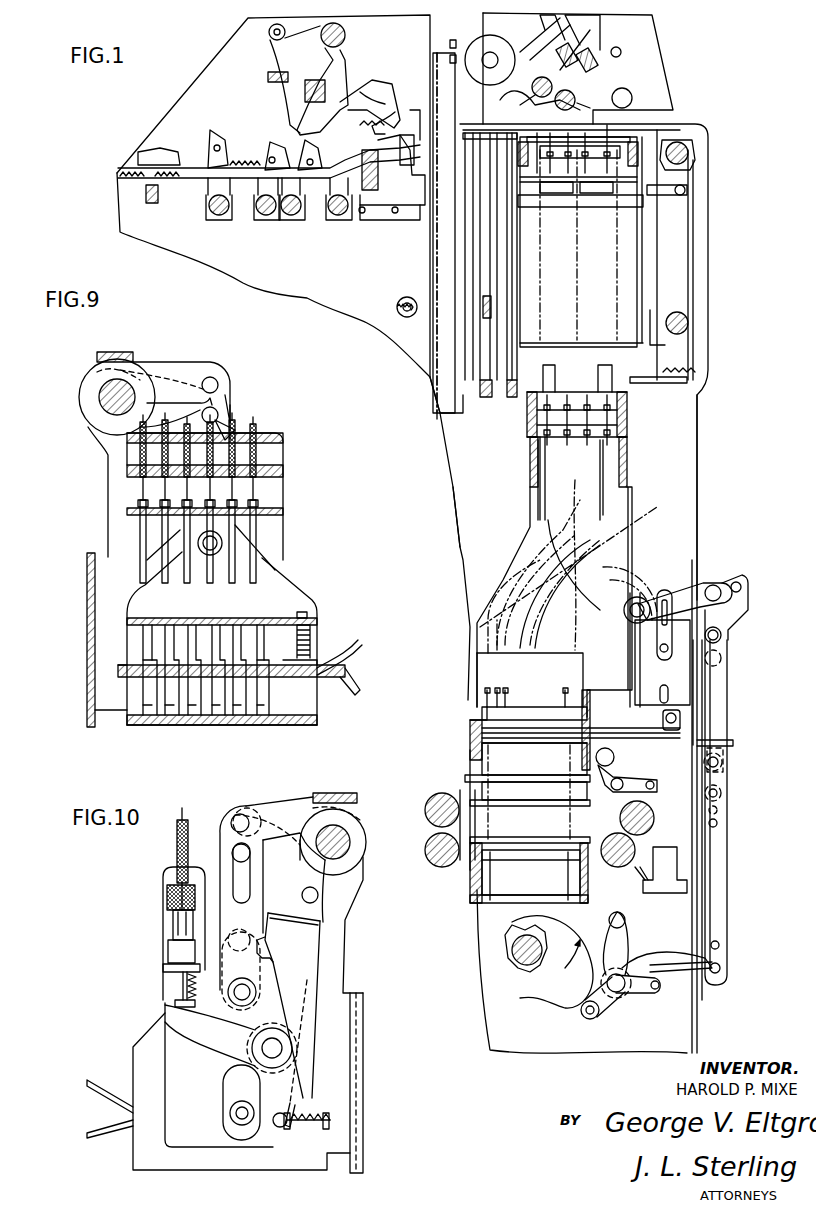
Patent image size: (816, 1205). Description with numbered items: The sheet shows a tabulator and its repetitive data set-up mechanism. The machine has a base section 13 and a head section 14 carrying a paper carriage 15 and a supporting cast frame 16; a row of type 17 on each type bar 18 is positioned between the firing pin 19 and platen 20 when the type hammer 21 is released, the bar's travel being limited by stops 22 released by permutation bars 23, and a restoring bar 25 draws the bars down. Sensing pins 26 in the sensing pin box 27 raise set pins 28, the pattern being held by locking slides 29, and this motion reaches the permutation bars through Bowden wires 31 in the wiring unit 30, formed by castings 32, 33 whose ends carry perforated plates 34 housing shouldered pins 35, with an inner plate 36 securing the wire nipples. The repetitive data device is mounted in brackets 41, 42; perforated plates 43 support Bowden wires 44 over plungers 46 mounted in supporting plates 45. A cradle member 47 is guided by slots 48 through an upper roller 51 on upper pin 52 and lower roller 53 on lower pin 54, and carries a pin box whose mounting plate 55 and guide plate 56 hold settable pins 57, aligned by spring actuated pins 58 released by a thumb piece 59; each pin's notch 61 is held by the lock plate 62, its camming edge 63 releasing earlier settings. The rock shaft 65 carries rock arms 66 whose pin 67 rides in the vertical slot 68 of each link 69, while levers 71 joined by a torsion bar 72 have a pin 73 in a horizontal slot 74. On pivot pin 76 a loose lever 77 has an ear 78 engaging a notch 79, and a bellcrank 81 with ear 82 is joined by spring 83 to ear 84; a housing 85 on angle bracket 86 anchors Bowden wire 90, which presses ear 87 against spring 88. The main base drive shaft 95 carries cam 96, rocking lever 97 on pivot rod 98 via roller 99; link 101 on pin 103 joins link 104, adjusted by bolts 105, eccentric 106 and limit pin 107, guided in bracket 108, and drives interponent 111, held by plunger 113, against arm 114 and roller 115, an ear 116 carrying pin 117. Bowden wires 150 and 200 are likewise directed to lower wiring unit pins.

In FIG. 1, the base section 13 is at (465, 950).
In FIG. 1, the head section 14 is at (703, 403).
In FIG. 1, the paper carriage 15 is at (670, 60).
In FIG. 1, the supporting cast frame 16 is at (470, 456).
In FIG. 1, the type 17 is at (435, 62).
In FIG. 1, the type bar 18 is at (434, 425).
In FIG. 1, the firing pin 19 is at (400, 62).
In FIG. 1, the platen 20 is at (480, 78).
In FIG. 1, the type hammer 21 is at (352, 72).
In FIG. 1, the stops 22 is at (555, 203).
In FIG. 1, the permutation bars 23 is at (600, 190).
In FIG. 1, the restoring bar 25 is at (485, 300).
In FIG. 1, the sensing pins 26 is at (560, 885).
In FIG. 1, the sensing pin box 27 is at (472, 888).
In FIG. 1, the set pins 28 is at (565, 765).
In FIG. 1, the locking slides 29 is at (475, 790).
In FIG. 1, the wiring unit 30 is at (518, 516).
In FIG. 1, the Bowden wires 31 is at (525, 552).
In FIG. 1, the casting 32 is at (528, 470).
In FIG. 1, the rear wiring unit casting 33 is at (622, 472).
In FIG. 1, the perforated plates 34 is at (617, 424).
In FIG. 1, the shouldered pins 35 is at (540, 402).
In FIG. 1, the plate 36 is at (548, 455).
In FIG. 1, the bracket 41 is at (655, 700).
In FIG. 9, the bracket 42 is at (105, 558).
In FIG. 10, the bracket 42 is at (355, 1037).
In FIG. 9, the perforated plates 43 is at (283, 468).
In FIG. 1, the Bowden wires 44 is at (610, 517).
In FIG. 9, the Bowden wires 44 is at (165, 457).
In FIG. 9, the supporting plates 45 is at (283, 520).
In FIG. 9, the plungers 46 is at (230, 575).
In FIG. 9, the cradle member 47 is at (300, 598).
In FIG. 10, the cradle member 47 is at (147, 1152).
In FIG. 10, the slots 48 is at (203, 1090).
In FIG. 10, the upper roller 51 is at (252, 975).
In FIG. 10, the upper pin 52 is at (250, 994).
In FIG. 10, the lower roller 53 is at (223, 1108).
In FIG. 10, the lower pin 54 is at (238, 1115).
In FIG. 9, the mounting plate 55 is at (320, 685).
In FIG. 9, the guide plate 56 is at (307, 628).
In FIG. 9, the settable pins 57 is at (252, 652).
In FIG. 9, the spring actuated pins 58 is at (312, 722).
In FIG. 9, the thumb piece 59 is at (357, 652).
In FIG. 9, the notch 61 is at (260, 700).
In FIG. 9, the lock plate 62 is at (118, 677).
In FIG. 9, the camming edge 63 is at (155, 700).
In FIG. 1, the rock shaft 65 is at (635, 640).
In FIG. 10, the rock shaft 65 is at (350, 828).
In FIG. 9, the rock arms 66 is at (220, 413).
In FIG. 10, the rock arms 66 is at (285, 868).
In FIG. 9, the pin 67 is at (110, 397).
In FIG. 10, the pin 67 is at (236, 850).
In FIG. 10, the vertical slot 68 is at (238, 888).
In FIG. 1, the link 69 is at (672, 630).
In FIG. 9, the link 69 is at (230, 393).
In FIG. 10, the link 69 is at (263, 813).
In FIG. 9, the levers 71 is at (168, 368).
In FIG. 10, the levers 71 is at (300, 808).
In FIG. 9, the torsion bar 72 is at (112, 353).
In FIG. 10, the torsion bar 72 is at (345, 793).
In FIG. 9, the pin 73 is at (210, 377).
In FIG. 10, the pin 73 is at (240, 815).
In FIG. 10, the horizontal slot 74 is at (255, 803).
In FIG. 10, the pivot pin 76 is at (278, 1050).
In FIG. 10, the loose lever 77 is at (310, 964).
In FIG. 10, the ear 78 is at (338, 920).
In FIG. 10, the notch 79 is at (268, 952).
In FIG. 10, the bellcrank 81 is at (311, 1053).
In FIG. 10, the ear 82 is at (330, 1122).
In FIG. 10, the spring 83 is at (305, 1140).
In FIG. 10, the ear 84 is at (270, 1130).
In FIG. 10, the housing 85 is at (170, 950).
In FIG. 10, the angle bracket 86 is at (170, 968).
In FIG. 10, the ear 87 is at (167, 1003).
In FIG. 10, the spring 88 is at (195, 978).
In FIG. 1, the Bowden wire 90 is at (500, 612).
In FIG. 10, the Bowden wire 90 is at (178, 845).
In FIG. 1, the main base drive shaft 95 is at (515, 955).
In FIG. 1, the cam 96 is at (545, 1000).
In FIG. 1, the lever 97 is at (618, 992).
In FIG. 1, the pivot rod 98 is at (630, 998).
In FIG. 1, the roller 99 is at (590, 1020).
In FIG. 1, the link 101 is at (722, 953).
In FIG. 1, the pin 103 is at (718, 972).
In FIG. 1, the link 104 is at (720, 903).
In FIG. 1, the bolts 105 is at (728, 827).
In FIG. 1, the eccentric 106 is at (725, 792).
In FIG. 1, the limit pin 107 is at (730, 810).
In FIG. 1, the bracket 108 is at (715, 748).
In FIG. 1, the interponent 111 is at (733, 628).
In FIG. 1, the plunger 113 is at (725, 642).
In FIG. 1, the arm 114 is at (690, 595).
In FIG. 1, the roller 115 is at (722, 585).
In FIG. 1, the ear 116 is at (740, 610).
In FIG. 1, the pin 117 is at (745, 590).
In FIG. 1, the Bowden wire 150 is at (552, 595).
In FIG. 1, the Bowden wire 200 is at (490, 663).